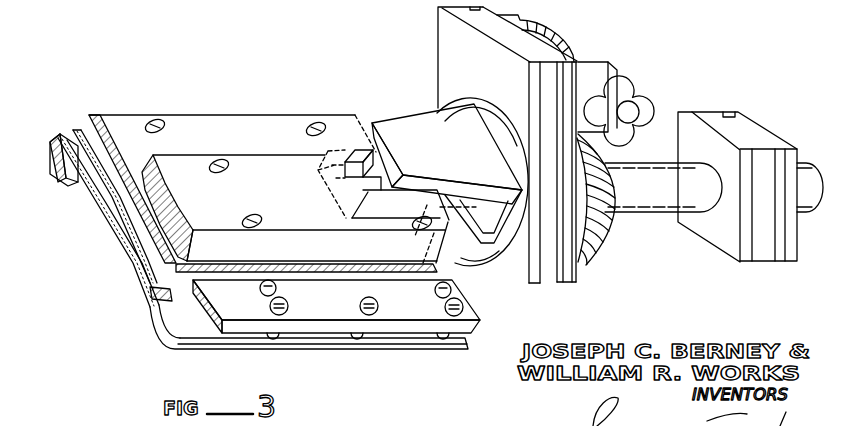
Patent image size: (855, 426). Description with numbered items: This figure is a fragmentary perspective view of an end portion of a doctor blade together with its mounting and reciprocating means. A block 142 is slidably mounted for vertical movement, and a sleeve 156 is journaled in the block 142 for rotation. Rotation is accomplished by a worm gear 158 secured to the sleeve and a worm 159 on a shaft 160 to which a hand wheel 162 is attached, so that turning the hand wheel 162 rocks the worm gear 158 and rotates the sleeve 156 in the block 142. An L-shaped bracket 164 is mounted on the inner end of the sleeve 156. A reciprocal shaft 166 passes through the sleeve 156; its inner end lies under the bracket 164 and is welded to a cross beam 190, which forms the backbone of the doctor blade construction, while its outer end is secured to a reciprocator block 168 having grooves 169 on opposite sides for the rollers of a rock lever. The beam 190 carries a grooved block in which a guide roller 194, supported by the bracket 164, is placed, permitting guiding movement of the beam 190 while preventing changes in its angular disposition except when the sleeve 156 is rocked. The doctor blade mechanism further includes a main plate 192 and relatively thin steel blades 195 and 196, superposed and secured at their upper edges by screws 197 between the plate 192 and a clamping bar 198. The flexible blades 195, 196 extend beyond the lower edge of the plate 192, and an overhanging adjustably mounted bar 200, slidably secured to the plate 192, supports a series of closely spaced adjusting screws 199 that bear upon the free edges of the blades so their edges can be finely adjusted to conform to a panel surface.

The block 142 is at (447, 51).
The sleeve 156 is at (493, 110).
The worm gear 158 is at (597, 243).
The worm 159 is at (548, 37).
The shaft 160 is at (629, 123).
The hand wheel 162 is at (634, 92).
The L-shaped bracket 164 is at (455, 159).
The reciprocal shaft 166 is at (682, 202).
The reciprocator block 168 is at (718, 160).
The grooves 169 is at (780, 249).
The cross beam 190 is at (262, 201).
The main plate 192 is at (269, 182).
The guide roller 194 is at (350, 182).
The flexible steel blade 195 is at (140, 265).
The flexible steel blade 196 is at (153, 285).
The screws 197 is at (160, 121).
The clamping bar 198 is at (68, 182).
The adjusting screws 199 is at (288, 303).
The adjustably mounted bar 200 is at (256, 312).